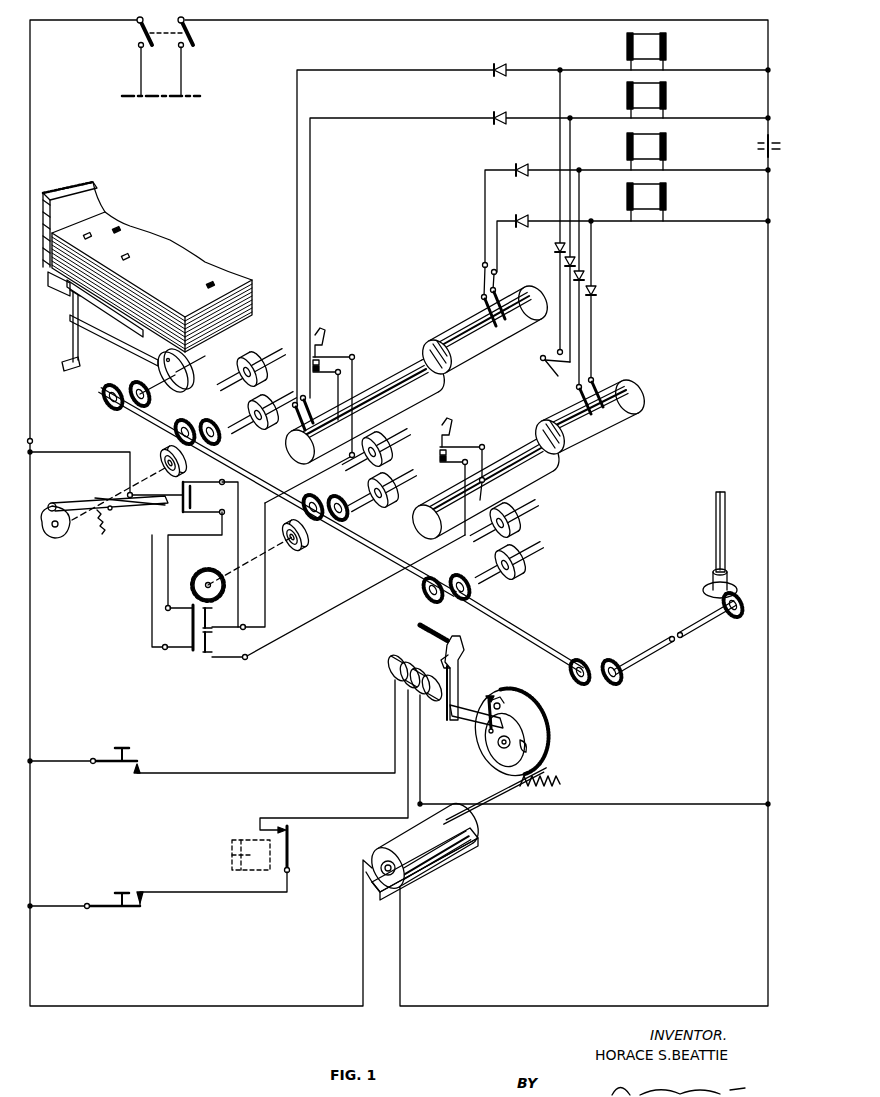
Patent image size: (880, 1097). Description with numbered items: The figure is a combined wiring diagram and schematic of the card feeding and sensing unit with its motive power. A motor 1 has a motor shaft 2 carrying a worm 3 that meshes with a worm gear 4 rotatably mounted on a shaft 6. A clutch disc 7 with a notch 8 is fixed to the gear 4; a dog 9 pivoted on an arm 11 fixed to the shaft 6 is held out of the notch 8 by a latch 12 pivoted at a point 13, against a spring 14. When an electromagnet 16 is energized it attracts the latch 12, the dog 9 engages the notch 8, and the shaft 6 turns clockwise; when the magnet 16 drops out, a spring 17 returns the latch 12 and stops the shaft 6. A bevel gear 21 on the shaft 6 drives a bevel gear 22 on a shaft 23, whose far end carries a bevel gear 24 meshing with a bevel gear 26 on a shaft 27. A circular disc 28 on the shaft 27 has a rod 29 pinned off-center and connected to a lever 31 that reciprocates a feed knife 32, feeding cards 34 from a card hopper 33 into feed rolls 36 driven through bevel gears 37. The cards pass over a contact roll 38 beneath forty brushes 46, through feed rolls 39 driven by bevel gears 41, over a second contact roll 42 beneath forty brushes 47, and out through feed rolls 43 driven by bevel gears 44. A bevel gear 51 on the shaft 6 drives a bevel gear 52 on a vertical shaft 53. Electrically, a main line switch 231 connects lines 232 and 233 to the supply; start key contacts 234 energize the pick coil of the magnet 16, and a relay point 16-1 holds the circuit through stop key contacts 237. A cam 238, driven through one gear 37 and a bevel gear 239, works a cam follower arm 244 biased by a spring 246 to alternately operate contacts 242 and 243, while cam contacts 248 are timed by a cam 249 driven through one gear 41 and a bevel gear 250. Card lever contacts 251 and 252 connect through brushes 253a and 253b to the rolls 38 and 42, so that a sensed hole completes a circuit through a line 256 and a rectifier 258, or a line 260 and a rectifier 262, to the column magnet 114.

The motor 1 is at (435, 872).
The motor shaft 2 is at (482, 822).
The worm 3 is at (558, 782).
The worm gear 4 is at (548, 735).
The shaft 6 is at (598, 690).
The clutch disc 7 is at (498, 758).
The notch 8 is at (530, 745).
The dog 9 is at (489, 695).
The arm 11 is at (472, 725).
The latch 12 is at (450, 715).
The pivot point 13 is at (447, 658).
The spring 14 is at (505, 705).
The electromagnet 16 is at (396, 660).
The relay point 16-1 is at (290, 832).
The spring 17 is at (420, 626).
The bevel gear 21 is at (622, 680).
The bevel gear 22 is at (590, 652).
The shaft 23 is at (535, 640).
The bevel gear 24 is at (110, 407).
The bevel gear 26 is at (142, 385).
The shaft 27 is at (162, 398).
The circular disc 28 is at (185, 380).
The rod 29 is at (120, 352).
The lever 31 is at (70, 347).
The feed knife 32 is at (65, 298).
The card hopper 33 is at (85, 198).
The cards 34 is at (163, 244).
The feed rolls 36 is at (238, 388).
The bevel gears 37 is at (208, 422).
The contact roll 38 is at (385, 372).
The feed rolls 39 is at (380, 505).
The bevel gears 41 is at (308, 496).
The contact roll 42 is at (528, 452).
The feed rolls 43 is at (522, 560).
The bevel gears 44 is at (430, 578).
The brushes 46 is at (310, 402).
The brushes 47 is at (596, 380).
The bevel gear 51 is at (735, 618).
The bevel gear 52 is at (712, 586).
The vertical shaft 53 is at (716, 515).
The column magnet 114 is at (627, 55).
The main line switch 231 is at (172, 38).
The line 232 is at (32, 440).
The line 233 is at (768, 342).
The start key contacts 234 is at (145, 764).
The stop key contacts 237 is at (145, 905).
The cam 238 is at (55, 540).
The bevel gear 239 is at (162, 452).
The contacts 242 is at (180, 486).
The contacts 243 is at (195, 497).
The cam follower arm 244 is at (145, 507).
The spring 246 is at (108, 532).
The cam contacts 248 is at (212, 655).
The cam 249 is at (220, 596).
The bevel gear 250 is at (305, 548).
The card lever contacts 251 is at (335, 355).
The card lever contacts 252 is at (470, 445).
The brush 253a is at (350, 462).
The brush 253b is at (478, 535).
The line 256 is at (385, 116).
The rectifier 258 is at (500, 76).
The line 260 is at (575, 368).
The rectifier 262 is at (566, 250).